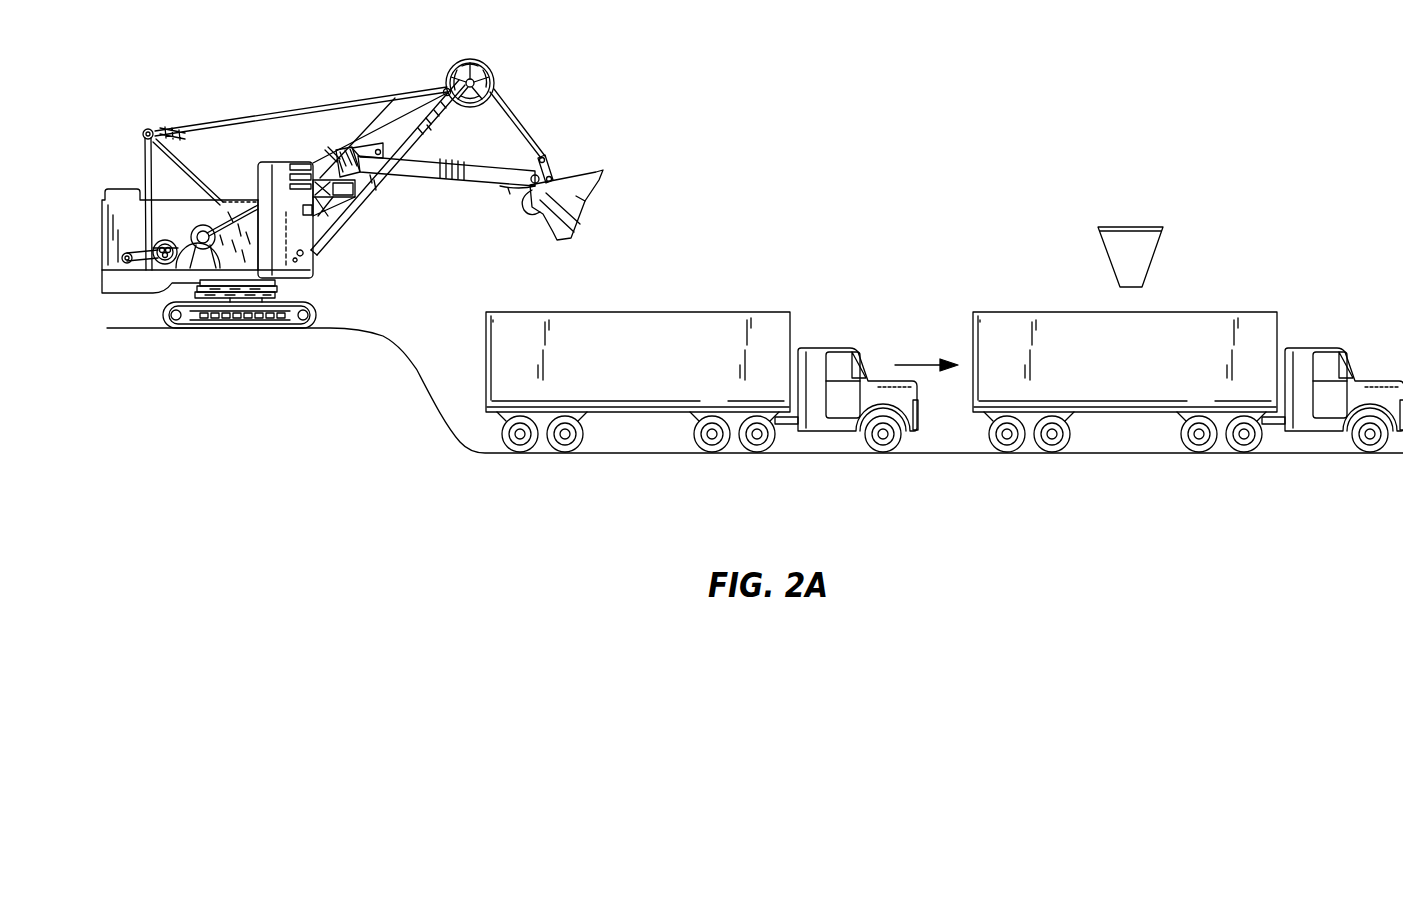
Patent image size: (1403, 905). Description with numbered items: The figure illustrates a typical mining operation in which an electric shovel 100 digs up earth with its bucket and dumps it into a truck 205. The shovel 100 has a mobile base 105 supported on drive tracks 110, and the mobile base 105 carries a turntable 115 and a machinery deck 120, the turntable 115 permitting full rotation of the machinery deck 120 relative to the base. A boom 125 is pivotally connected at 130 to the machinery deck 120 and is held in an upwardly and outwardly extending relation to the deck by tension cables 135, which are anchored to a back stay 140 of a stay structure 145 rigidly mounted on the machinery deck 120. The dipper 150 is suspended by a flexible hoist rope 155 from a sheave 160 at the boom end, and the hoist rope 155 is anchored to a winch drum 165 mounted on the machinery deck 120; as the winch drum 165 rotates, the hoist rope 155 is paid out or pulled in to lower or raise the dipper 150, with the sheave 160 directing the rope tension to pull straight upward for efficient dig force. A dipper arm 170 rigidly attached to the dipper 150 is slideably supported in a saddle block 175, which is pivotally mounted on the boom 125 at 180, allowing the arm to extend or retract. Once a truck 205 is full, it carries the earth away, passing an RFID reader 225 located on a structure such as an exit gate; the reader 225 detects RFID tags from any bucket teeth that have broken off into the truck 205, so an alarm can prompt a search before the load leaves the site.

The electric shovel 100 is at (376, 225).
The mobile base 105 is at (243, 312).
The drive tracks 110 is at (318, 310).
The turntable 115 is at (278, 290).
The machinery deck 120 is at (197, 260).
The boom 125 is at (428, 136).
The pivotal connection 130 is at (314, 268).
The tension cables 135 is at (340, 97).
The back stay 140 is at (143, 165).
The stay structure 145 is at (200, 183).
The dipper 150 is at (587, 220).
The hoist rope 155 is at (520, 110).
The sheave 160 is at (490, 64).
The winch drum 165 is at (193, 232).
The dipper arm 170 is at (438, 175).
The saddle block 175 is at (380, 150).
The pivotal mounting 180 is at (374, 182).
The truck 205 is at (702, 312).
The RFID reader 225 is at (1103, 252).